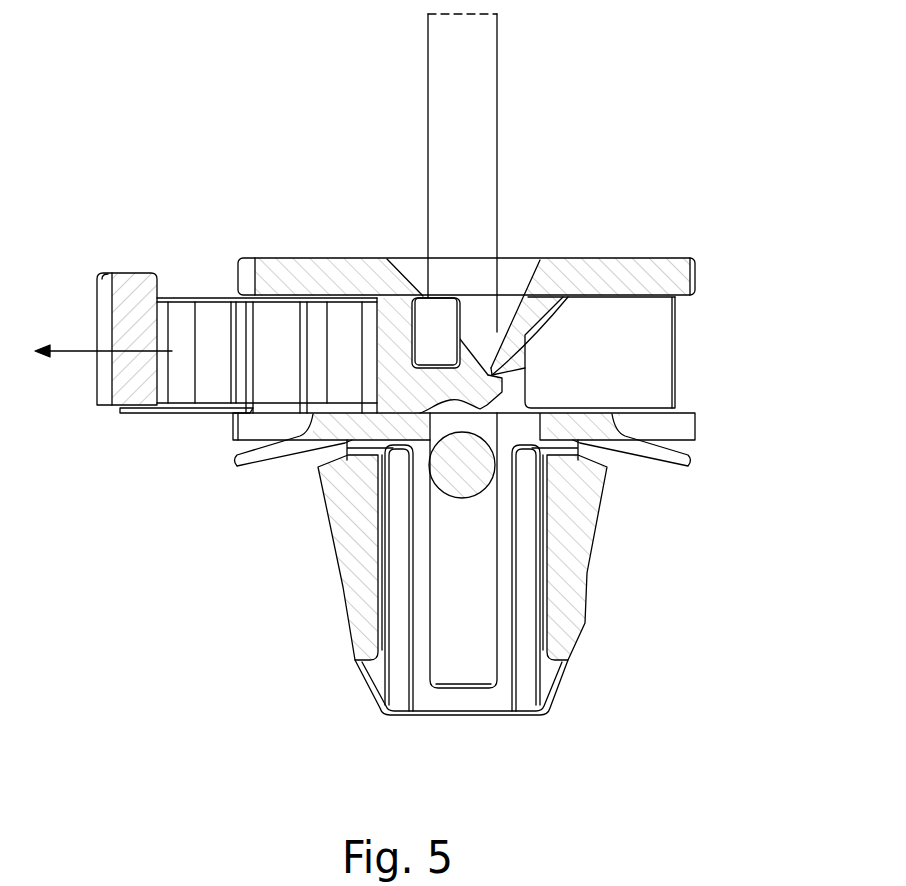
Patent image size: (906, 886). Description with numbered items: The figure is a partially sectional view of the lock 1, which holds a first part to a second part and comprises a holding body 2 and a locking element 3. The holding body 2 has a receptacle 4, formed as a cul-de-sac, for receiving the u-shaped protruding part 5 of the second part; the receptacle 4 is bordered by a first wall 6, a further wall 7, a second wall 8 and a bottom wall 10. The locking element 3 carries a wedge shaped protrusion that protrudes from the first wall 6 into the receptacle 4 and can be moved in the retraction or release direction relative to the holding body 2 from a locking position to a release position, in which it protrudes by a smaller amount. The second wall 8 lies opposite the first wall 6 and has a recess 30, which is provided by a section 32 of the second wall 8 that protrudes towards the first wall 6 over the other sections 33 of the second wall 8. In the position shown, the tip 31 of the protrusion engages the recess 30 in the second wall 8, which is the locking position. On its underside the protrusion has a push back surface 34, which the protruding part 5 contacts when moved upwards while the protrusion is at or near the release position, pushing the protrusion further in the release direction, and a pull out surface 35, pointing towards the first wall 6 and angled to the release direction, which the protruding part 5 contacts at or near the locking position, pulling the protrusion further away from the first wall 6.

The lock 1 is at (700, 190).
The holding body 2 is at (675, 273).
The locking element 3 is at (128, 287).
The receptacle 4 is at (460, 525).
The u-shaped protruding part 5 is at (478, 153).
The first wall 6 is at (430, 605).
The further wall 7 is at (478, 571).
The second wall 8 is at (505, 660).
The bottom wall 10 is at (460, 690).
The recess 30 is at (507, 383).
The tip 31 is at (505, 373).
The section of the second wall 32 is at (498, 328).
The other sections of the second wall 33 is at (507, 497).
The push back surface 34 is at (482, 405).
The pull out surface 35 is at (393, 448).